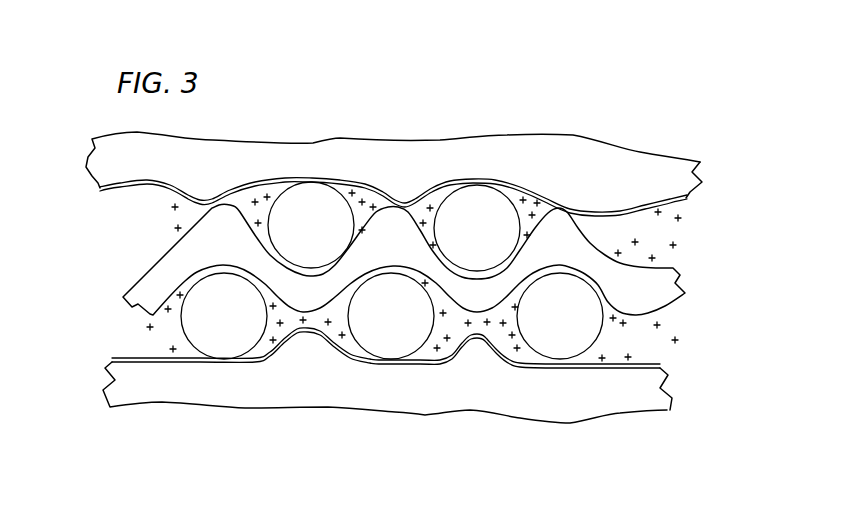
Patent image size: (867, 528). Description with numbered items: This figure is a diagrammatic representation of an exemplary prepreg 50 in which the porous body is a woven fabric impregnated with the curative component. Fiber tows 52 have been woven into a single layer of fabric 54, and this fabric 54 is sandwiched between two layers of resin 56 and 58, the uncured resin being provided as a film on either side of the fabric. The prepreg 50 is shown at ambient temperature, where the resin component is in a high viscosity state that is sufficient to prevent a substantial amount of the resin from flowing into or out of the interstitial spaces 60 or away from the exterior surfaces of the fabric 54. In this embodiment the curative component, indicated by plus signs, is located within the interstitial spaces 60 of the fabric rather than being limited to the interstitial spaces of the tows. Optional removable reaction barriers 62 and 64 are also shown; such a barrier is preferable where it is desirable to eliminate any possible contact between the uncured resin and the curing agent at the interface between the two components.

The prepreg 50 is at (124, 321).
The fiber tows 52 is at (311, 196).
The fabric 54 is at (143, 239).
The layer of resin 56 is at (263, 158).
The layer of resin 58 is at (530, 408).
The interstitial spaces 60 is at (356, 212).
The removable reaction barrier 62 is at (683, 201).
The removable reaction barrier 64 is at (657, 366).